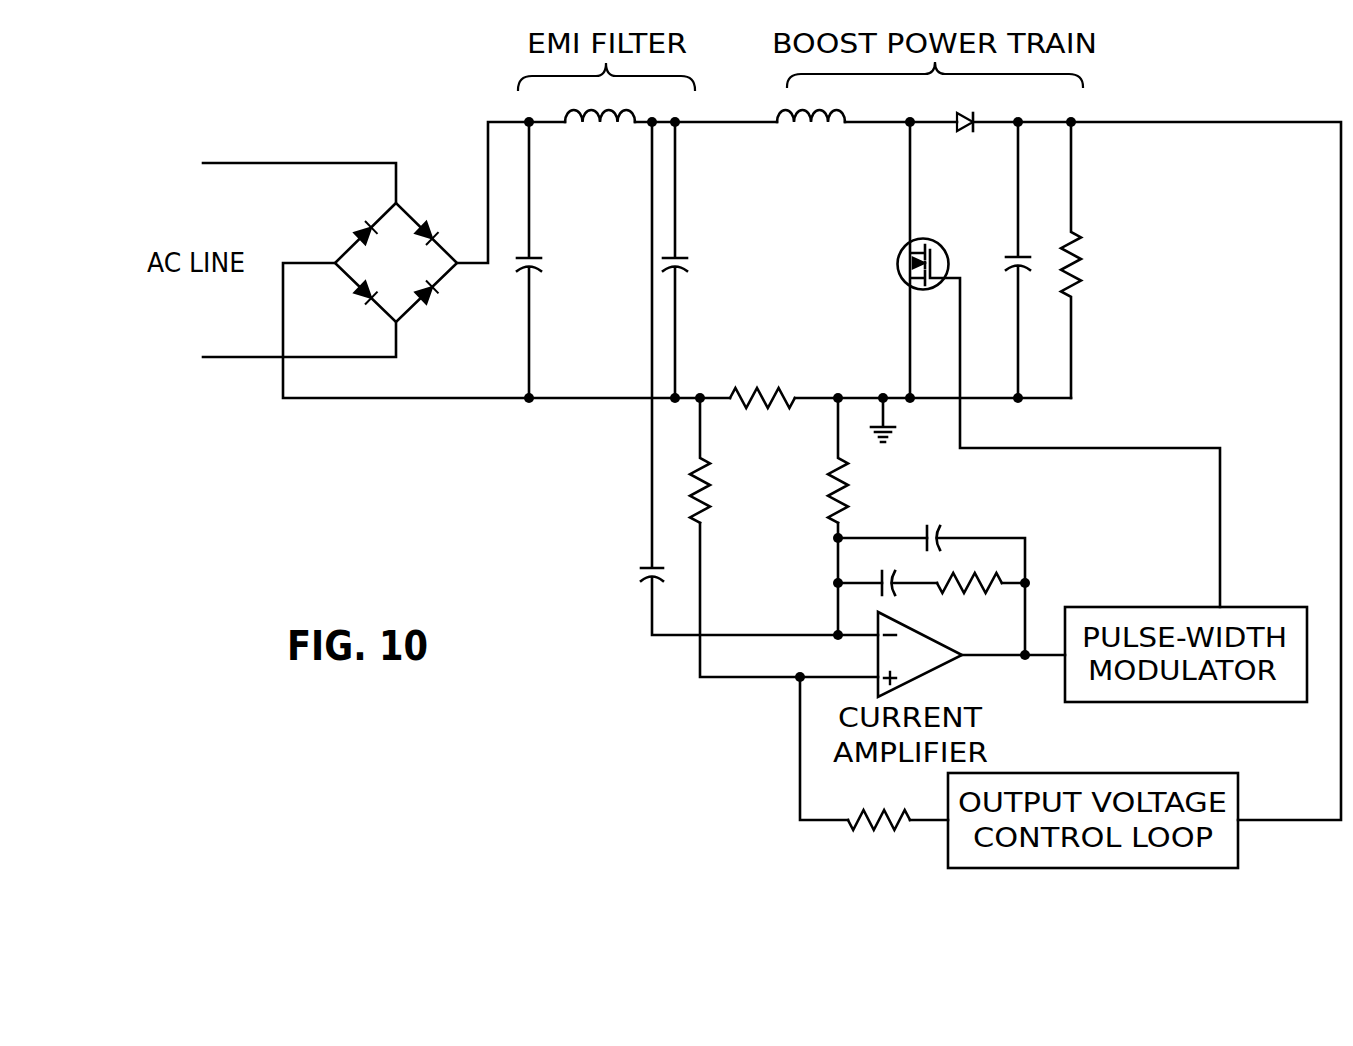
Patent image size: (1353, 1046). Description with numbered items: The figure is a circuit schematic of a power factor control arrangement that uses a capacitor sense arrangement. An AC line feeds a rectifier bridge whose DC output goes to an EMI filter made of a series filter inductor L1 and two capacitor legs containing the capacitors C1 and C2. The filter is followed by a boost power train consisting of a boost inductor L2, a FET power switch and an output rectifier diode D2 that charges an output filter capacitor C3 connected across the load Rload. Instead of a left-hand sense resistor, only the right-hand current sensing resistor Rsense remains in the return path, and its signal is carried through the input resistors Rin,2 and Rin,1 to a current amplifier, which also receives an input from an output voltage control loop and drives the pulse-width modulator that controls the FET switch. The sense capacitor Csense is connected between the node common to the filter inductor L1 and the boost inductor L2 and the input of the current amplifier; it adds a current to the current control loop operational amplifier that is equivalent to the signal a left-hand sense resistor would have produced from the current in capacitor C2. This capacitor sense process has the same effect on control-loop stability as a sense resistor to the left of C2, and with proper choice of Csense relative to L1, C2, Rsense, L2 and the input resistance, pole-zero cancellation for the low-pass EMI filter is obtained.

The series filter inductor L1 is at (600, 97).
The capacitor C1 is at (554, 260).
The capacitor C2 is at (700, 260).
The boost inductor L2 is at (811, 98).
The output rectifier diode D2 is at (971, 102).
The output filter capacitor C3 is at (998, 260).
The load Rload is at (1108, 260).
The current sensing resistor Rsense is at (759, 374).
The input resistor Rin,2 is at (738, 460).
The input resistor Rin,1 is at (875, 460).
The sense capacitor Csense is at (601, 358).